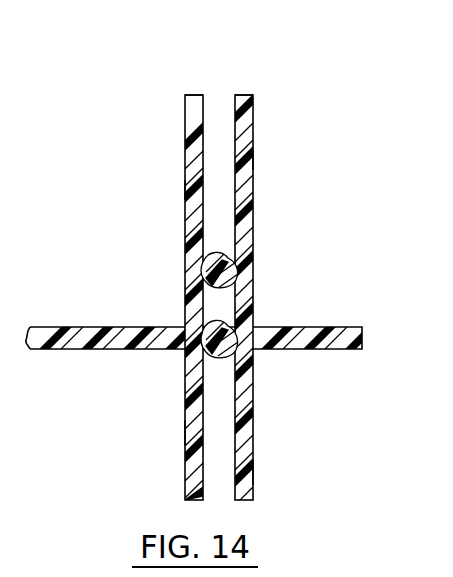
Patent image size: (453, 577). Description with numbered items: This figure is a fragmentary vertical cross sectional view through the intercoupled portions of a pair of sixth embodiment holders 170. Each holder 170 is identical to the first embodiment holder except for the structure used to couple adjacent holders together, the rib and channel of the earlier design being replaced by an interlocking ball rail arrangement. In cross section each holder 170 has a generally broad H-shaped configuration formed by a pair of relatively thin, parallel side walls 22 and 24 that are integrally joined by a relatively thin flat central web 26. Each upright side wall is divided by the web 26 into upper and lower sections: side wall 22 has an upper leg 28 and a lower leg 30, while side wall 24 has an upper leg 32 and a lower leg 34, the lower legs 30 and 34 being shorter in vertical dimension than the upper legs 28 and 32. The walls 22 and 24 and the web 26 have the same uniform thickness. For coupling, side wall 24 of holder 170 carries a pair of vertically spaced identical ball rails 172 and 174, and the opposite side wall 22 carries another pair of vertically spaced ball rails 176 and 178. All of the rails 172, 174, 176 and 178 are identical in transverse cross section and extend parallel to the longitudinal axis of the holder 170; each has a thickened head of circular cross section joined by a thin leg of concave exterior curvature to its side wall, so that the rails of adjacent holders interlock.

The side wall 22 is at (262, 138).
The side wall 24 is at (175, 144).
The central web 26 is at (114, 318).
The upper leg 28 is at (251, 160).
The lower leg 30 is at (252, 473).
The upper leg 32 is at (185, 190).
The lower leg 34 is at (187, 432).
The holder 170 is at (170, 98).
The ball rail 172 is at (248, 272).
The ball rail 174 is at (247, 333).
The ball rail 176 is at (217, 233).
The ball rail 178 is at (218, 395).